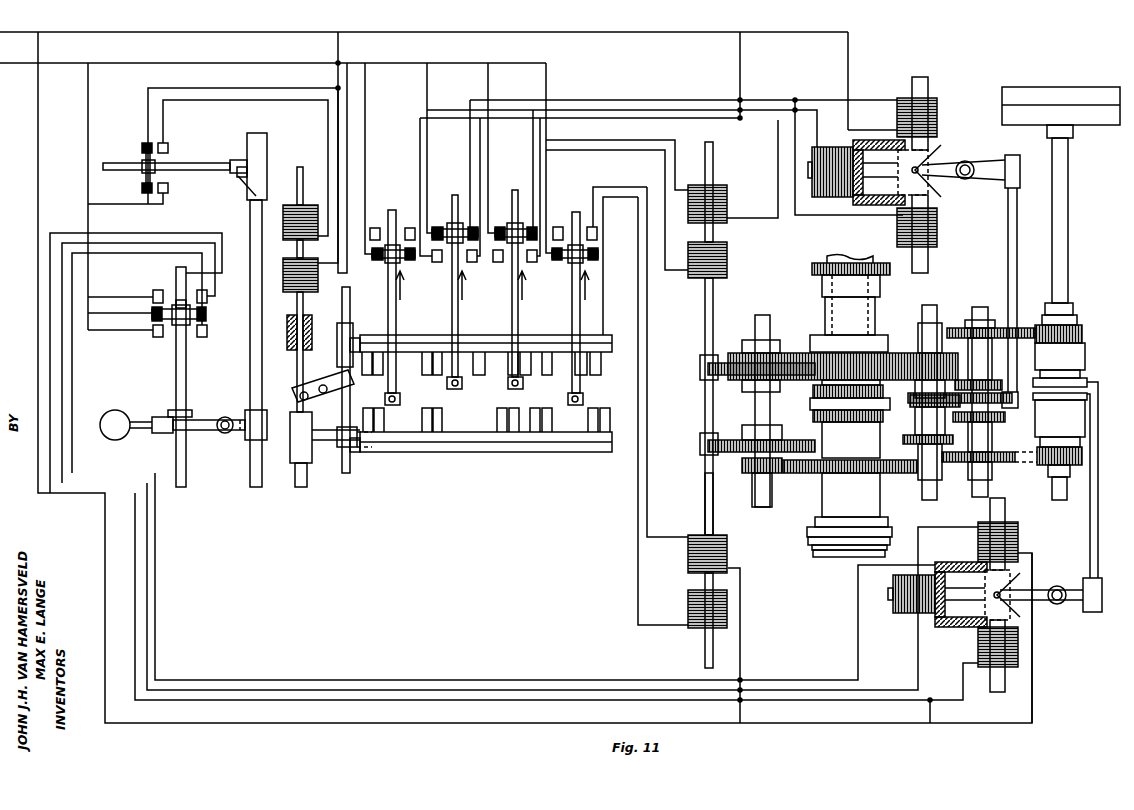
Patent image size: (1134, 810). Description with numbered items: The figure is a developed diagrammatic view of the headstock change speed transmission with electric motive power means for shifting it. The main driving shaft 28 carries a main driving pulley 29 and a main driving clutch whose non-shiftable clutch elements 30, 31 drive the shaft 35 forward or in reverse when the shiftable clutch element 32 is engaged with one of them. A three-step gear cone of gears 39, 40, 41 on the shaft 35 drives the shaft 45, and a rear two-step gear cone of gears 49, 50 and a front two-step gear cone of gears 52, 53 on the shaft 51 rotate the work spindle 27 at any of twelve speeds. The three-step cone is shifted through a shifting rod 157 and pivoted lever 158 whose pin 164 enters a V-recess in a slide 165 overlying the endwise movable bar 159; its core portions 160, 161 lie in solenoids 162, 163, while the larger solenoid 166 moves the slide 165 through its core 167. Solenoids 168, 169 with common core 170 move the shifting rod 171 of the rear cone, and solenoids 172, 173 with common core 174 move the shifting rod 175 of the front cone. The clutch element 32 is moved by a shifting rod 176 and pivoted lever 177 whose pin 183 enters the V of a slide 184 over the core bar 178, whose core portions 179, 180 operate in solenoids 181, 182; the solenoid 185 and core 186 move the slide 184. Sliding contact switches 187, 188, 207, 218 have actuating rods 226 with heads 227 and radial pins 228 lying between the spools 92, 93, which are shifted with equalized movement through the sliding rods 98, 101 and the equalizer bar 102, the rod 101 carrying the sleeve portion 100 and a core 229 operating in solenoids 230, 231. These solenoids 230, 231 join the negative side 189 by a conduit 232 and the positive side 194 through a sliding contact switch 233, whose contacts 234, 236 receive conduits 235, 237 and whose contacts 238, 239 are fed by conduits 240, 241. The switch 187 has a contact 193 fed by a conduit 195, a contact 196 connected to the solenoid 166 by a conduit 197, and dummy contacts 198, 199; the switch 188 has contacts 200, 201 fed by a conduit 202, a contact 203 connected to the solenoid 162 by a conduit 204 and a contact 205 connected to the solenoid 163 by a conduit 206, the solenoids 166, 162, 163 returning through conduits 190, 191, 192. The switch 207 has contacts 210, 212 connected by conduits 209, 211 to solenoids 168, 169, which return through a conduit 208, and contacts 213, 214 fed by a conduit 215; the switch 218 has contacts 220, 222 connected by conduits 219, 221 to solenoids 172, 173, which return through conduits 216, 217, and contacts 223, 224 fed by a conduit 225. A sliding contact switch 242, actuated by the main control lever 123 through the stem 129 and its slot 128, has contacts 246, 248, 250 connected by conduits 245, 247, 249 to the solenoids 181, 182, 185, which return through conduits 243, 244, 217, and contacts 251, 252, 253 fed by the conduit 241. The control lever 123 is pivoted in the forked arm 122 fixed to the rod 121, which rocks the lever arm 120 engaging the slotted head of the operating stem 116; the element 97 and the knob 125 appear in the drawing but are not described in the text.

The negative side of electrical circuit 189 is at (455, 32).
The positive side of electrical circuit 194 is at (250, 63).
The electrical conduit 190 is at (848, 78).
The electrical conduit 191 is at (860, 130).
The conduit 232 is at (347, 48).
The conduit 237 is at (183, 88).
The conduit 241 is at (88, 120).
The conduit 235 is at (228, 100).
The conduit 240 is at (125, 204).
The contact 236 is at (142, 150).
The contact 239 is at (142, 191).
The contact 234 is at (168, 150).
The contact 238 is at (168, 188).
The sliding contact switch 233 is at (134, 181).
The operating stem 116 is at (207, 163).
The lever arm 120 is at (245, 188).
The rod 121 is at (255, 378).
The forked arm 122 is at (245, 437).
The control lever 123 is at (210, 431).
The slot 128 is at (170, 412).
The knob 125 is at (108, 413).
The valve operating stem 129 is at (186, 376).
The contact 252 is at (150, 312).
The contact 251 is at (156, 295).
The contact 253 is at (153, 334).
The contact 248 is at (207, 330).
The contact 250 is at (200, 337).
The contact 246 is at (196, 268).
The sliding contact switch 242 is at (170, 338).
The conduit 217 is at (352, 723).
The conduit 247 is at (320, 700).
The conduit 249 is at (276, 690).
The conduit 245 is at (360, 680).
The conduit 216 is at (740, 635).
The conduit 244 is at (930, 690).
The conduit 243 is at (1032, 680).
The conduit 195 is at (365, 156).
The conduit 202 is at (427, 156).
The conduit 215 is at (488, 148).
The conduit 225 is at (546, 165).
The conduit 204 is at (580, 100).
The conduit 197 is at (614, 110).
The conduit 206 is at (598, 118).
The conduit 209 is at (650, 140).
The conduit 211 is at (667, 272).
The conduit 208 is at (778, 165).
The conduit 219 is at (647, 348).
The conduit 221 is at (638, 545).
The contact 220 is at (592, 227).
The contact 223 is at (557, 227).
The electrical conduit 192 is at (835, 215).
The dummy contact 198 is at (375, 228).
The dummy contact 199 is at (410, 228).
The contact 193 is at (374, 262).
The contact 196 is at (413, 262).
The contact 200 is at (435, 262).
The sliding contact switch 187 is at (413, 296).
The contact 203 is at (455, 200).
The contact 201 is at (453, 165).
The contact 205 is at (472, 262).
The contact 214 is at (498, 262).
The sliding contact switch 188 is at (474, 296).
The contact 213 is at (498, 227).
The contact 210 is at (528, 180).
The contact 212 is at (531, 262).
The contact 224 is at (558, 262).
The sliding contact switch 207 is at (533, 285).
The contact 222 is at (596, 258).
The sliding contact switch 218 is at (597, 291).
The head 227 is at (400, 395).
The radially extending pin 228 is at (508, 383).
The spool 92 is at (590, 340).
The spool 93 is at (585, 447).
The actuating rod 226 is at (380, 337).
The solenoid 230 is at (290, 205).
The solenoid 231 is at (284, 292).
The core 229 is at (293, 250).
The sliding rod 101 is at (300, 358).
The sleeve portion 100 is at (305, 465).
The shaft 97 is at (350, 325).
The sliding rod 98 is at (350, 386).
The equalizer bar 102 is at (326, 398).
The common core 170 is at (705, 232).
The solenoid 168 is at (727, 206).
The solenoid 169 is at (727, 262).
The shifting rod 171 is at (713, 295).
The shifting rod 175 is at (705, 495).
The solenoid 172 is at (727, 553).
The common core 174 is at (705, 585).
The solenoid 173 is at (727, 610).
The gear 50 is at (728, 375).
The gear 52 is at (730, 440).
The shaft 51 is at (758, 412).
The gear 49 is at (785, 353).
The gear 53 is at (745, 465).
The work spindle 27 is at (830, 557).
The shaft 45 is at (922, 318).
The shaft 35 is at (975, 312).
The gear 41 is at (987, 380).
The gear 39 is at (995, 422).
The gear 40 is at (1010, 408).
The shifting rod 157 is at (1012, 290).
The main driving pulley 29 is at (1075, 87).
The main driving shaft 28 is at (1068, 200).
The clutch element 31 is at (1085, 352).
The shiftable clutch element 32 is at (1087, 382).
The clutch element 30 is at (1085, 418).
The shifting rod 176 is at (1098, 503).
The core portion 160 is at (920, 92).
The core portion 161 is at (928, 258).
The solenoid 162 is at (937, 110).
The solenoid 163 is at (937, 229).
The slide 165 is at (935, 148).
The pin 164 is at (928, 168).
The endwise movable bar 159 is at (928, 200).
The pivoted lever 158 is at (1010, 160).
The solenoid 166 is at (830, 147).
The core 167 is at (810, 180).
The core portion 179 is at (1003, 512).
The core portion 180 is at (1003, 690).
The solenoid 181 is at (1018, 540).
The solenoid 182 is at (1018, 645).
The core bar 178 is at (1012, 565).
The pivoted lever 177 is at (1035, 590).
The pin 183 is at (1020, 600).
The slide 184 is at (965, 608).
The solenoid 185 is at (912, 613).
The core 186 is at (890, 598).